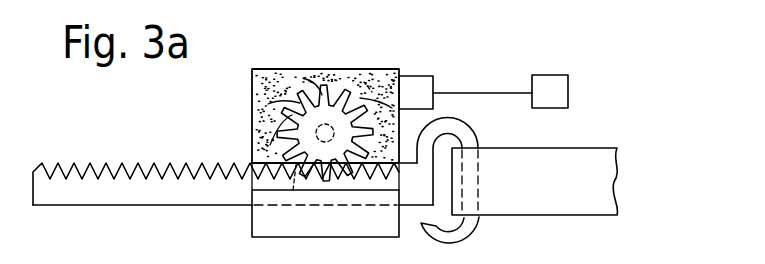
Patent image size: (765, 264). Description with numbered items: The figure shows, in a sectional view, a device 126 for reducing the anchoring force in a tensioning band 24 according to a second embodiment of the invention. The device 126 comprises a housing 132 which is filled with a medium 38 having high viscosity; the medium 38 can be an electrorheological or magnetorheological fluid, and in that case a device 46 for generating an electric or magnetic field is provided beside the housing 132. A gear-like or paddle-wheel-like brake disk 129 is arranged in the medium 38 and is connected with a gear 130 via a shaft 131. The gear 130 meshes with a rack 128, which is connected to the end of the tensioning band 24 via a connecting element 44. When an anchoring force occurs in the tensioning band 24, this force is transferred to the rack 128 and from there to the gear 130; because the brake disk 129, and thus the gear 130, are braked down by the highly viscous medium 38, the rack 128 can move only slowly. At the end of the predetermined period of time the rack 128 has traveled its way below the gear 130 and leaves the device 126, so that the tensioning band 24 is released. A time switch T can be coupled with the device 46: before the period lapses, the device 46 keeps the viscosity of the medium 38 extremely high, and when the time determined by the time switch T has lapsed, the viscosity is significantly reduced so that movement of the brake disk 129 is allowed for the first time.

The device 126 is at (406, 56).
The housing 132 is at (258, 69).
The medium 38 is at (268, 115).
The gear 130 is at (336, 80).
The brake disk 129 is at (368, 78).
The shaft 131 is at (318, 172).
The rack 128 is at (172, 193).
The device for generating an electric or magnetic field 46 is at (423, 90).
The time switch T is at (557, 90).
The tensioning band 24 is at (543, 173).
The connecting element 44 is at (470, 232).